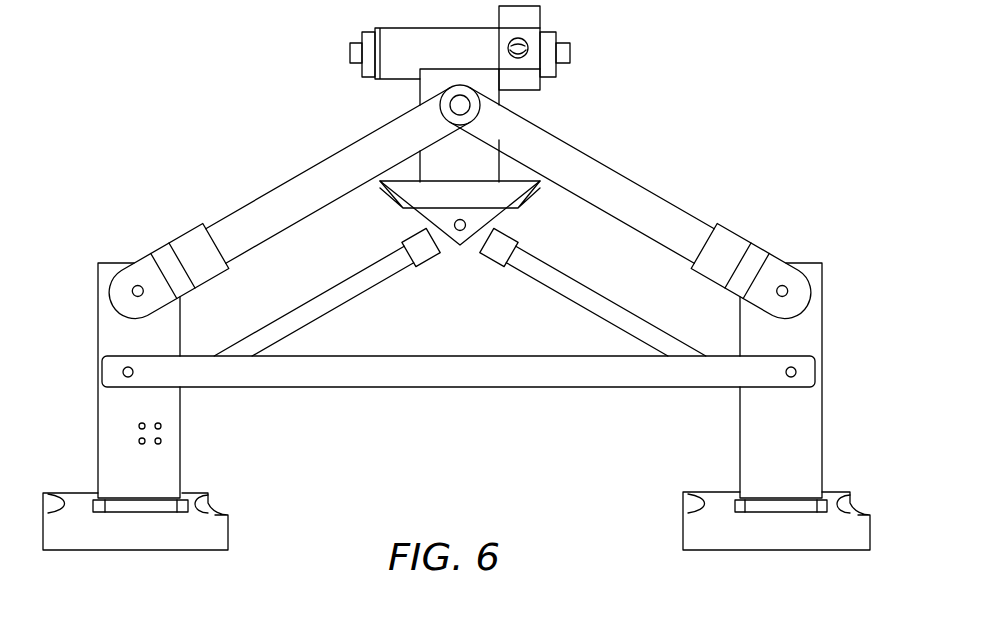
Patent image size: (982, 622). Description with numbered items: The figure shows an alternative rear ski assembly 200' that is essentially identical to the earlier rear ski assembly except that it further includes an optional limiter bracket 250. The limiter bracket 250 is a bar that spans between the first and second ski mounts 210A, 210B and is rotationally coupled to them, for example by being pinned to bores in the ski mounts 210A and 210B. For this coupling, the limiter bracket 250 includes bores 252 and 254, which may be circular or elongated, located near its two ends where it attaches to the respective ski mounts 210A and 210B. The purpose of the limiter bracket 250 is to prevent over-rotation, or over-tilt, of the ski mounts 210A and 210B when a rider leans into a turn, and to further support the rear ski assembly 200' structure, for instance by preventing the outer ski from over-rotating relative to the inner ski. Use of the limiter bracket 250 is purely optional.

The rear ski assembly 200' is at (460, 278).
The first ski mount 210A is at (108, 336).
The second ski mount 210B is at (812, 338).
The limiter bracket 250 is at (457, 381).
The bore 252 is at (123, 372).
The bore 254 is at (788, 378).